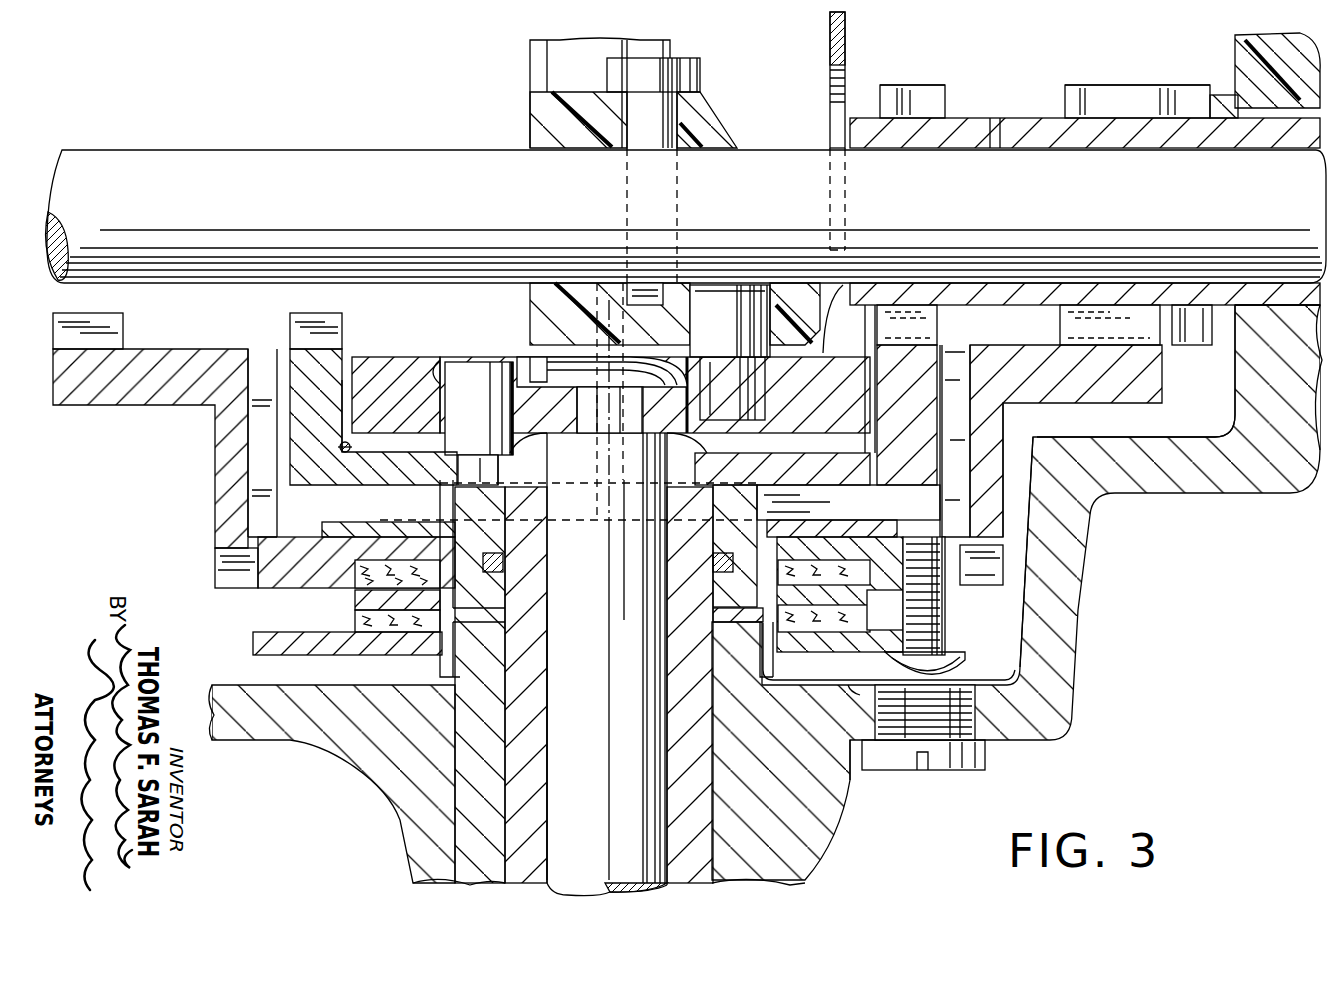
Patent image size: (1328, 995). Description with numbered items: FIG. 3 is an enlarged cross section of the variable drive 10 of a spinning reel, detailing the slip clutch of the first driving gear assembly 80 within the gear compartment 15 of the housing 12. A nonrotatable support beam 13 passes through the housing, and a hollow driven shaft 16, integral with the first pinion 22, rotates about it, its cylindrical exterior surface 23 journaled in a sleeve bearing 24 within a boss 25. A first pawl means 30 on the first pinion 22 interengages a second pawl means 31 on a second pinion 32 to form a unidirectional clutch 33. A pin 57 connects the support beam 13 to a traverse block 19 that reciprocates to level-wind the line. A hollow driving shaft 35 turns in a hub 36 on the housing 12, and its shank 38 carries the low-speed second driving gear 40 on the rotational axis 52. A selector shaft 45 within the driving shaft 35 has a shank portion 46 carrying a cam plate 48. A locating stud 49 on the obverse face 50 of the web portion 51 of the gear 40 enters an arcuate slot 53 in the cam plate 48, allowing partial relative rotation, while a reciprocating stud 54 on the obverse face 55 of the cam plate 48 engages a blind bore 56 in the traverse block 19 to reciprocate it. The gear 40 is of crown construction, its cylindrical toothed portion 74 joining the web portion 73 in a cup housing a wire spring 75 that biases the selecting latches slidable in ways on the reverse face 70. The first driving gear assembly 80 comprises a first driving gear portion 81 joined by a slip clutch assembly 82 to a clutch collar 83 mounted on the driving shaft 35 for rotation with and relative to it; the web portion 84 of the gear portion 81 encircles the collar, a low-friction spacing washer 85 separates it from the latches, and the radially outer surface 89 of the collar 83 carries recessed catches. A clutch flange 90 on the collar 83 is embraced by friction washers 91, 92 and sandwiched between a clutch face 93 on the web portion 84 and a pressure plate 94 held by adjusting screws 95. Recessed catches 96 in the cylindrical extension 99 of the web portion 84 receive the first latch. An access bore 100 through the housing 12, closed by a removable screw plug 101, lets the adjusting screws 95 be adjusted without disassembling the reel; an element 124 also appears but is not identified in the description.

The variable drive 10 is at (1088, 72).
The housing 12 is at (1062, 657).
The support beam 13 is at (686, 216).
The gear compartment 15 is at (1143, 422).
The driven shaft 16 is at (1200, 318).
The traverse block 19 is at (540, 100).
The first pinion 22 is at (1128, 88).
The cylindrical exterior surface 23 is at (1280, 330).
The sleeve bearing 24 is at (1275, 112).
The boss 25 is at (1243, 57).
The first pawl means 30 is at (1005, 128).
The second pawl means 31 is at (1005, 293).
The second pinion 32 is at (930, 86).
The unidirectional clutch 33 is at (998, 108).
The driving shaft 35 is at (702, 838).
The hub 36 is at (432, 852).
The shank 38 is at (680, 445).
The second driving gear 40 is at (933, 368).
The selector shaft 45 is at (555, 808).
The shank portion 46 is at (568, 372).
The cam plate 48 is at (385, 370).
The locating stud 49 is at (470, 360).
The obverse face 50 is at (440, 453).
The web portion 51 is at (354, 477).
The rotational axis 52 is at (592, 690).
The arcuate slot 53 is at (440, 376).
The reciprocating stud 54 is at (715, 305).
The obverse face 55 is at (835, 330).
The blind bore 56 is at (692, 328).
The pin 57 is at (700, 72).
The reverse face 70 is at (312, 488).
The web portion 73 is at (783, 466).
The cylindrical toothed portion 74 is at (297, 397).
The spring 75 is at (340, 448).
The first driving gear assembly 80 is at (1010, 562).
The first driving gear portion 81 is at (1012, 490).
The slip clutch assembly 82 is at (853, 700).
The clutch collar 83 is at (750, 512).
The web portion 84 is at (860, 540).
The spacing washer 85 is at (810, 528).
The radially outer surface 89 is at (450, 516).
The clutch flange 90 is at (362, 600).
The friction washer 91 is at (330, 568).
The friction washer 92 is at (382, 622).
The clutch face 93 is at (377, 560).
The pressure plate 94 is at (330, 645).
The adjusting screws 95 is at (955, 668).
The recessed catches 96 is at (263, 345).
The cylindrical extension 99 is at (1000, 525).
The access bore 100 is at (855, 700).
The screw plug 101 is at (987, 762).
The plate 124 is at (848, 37).